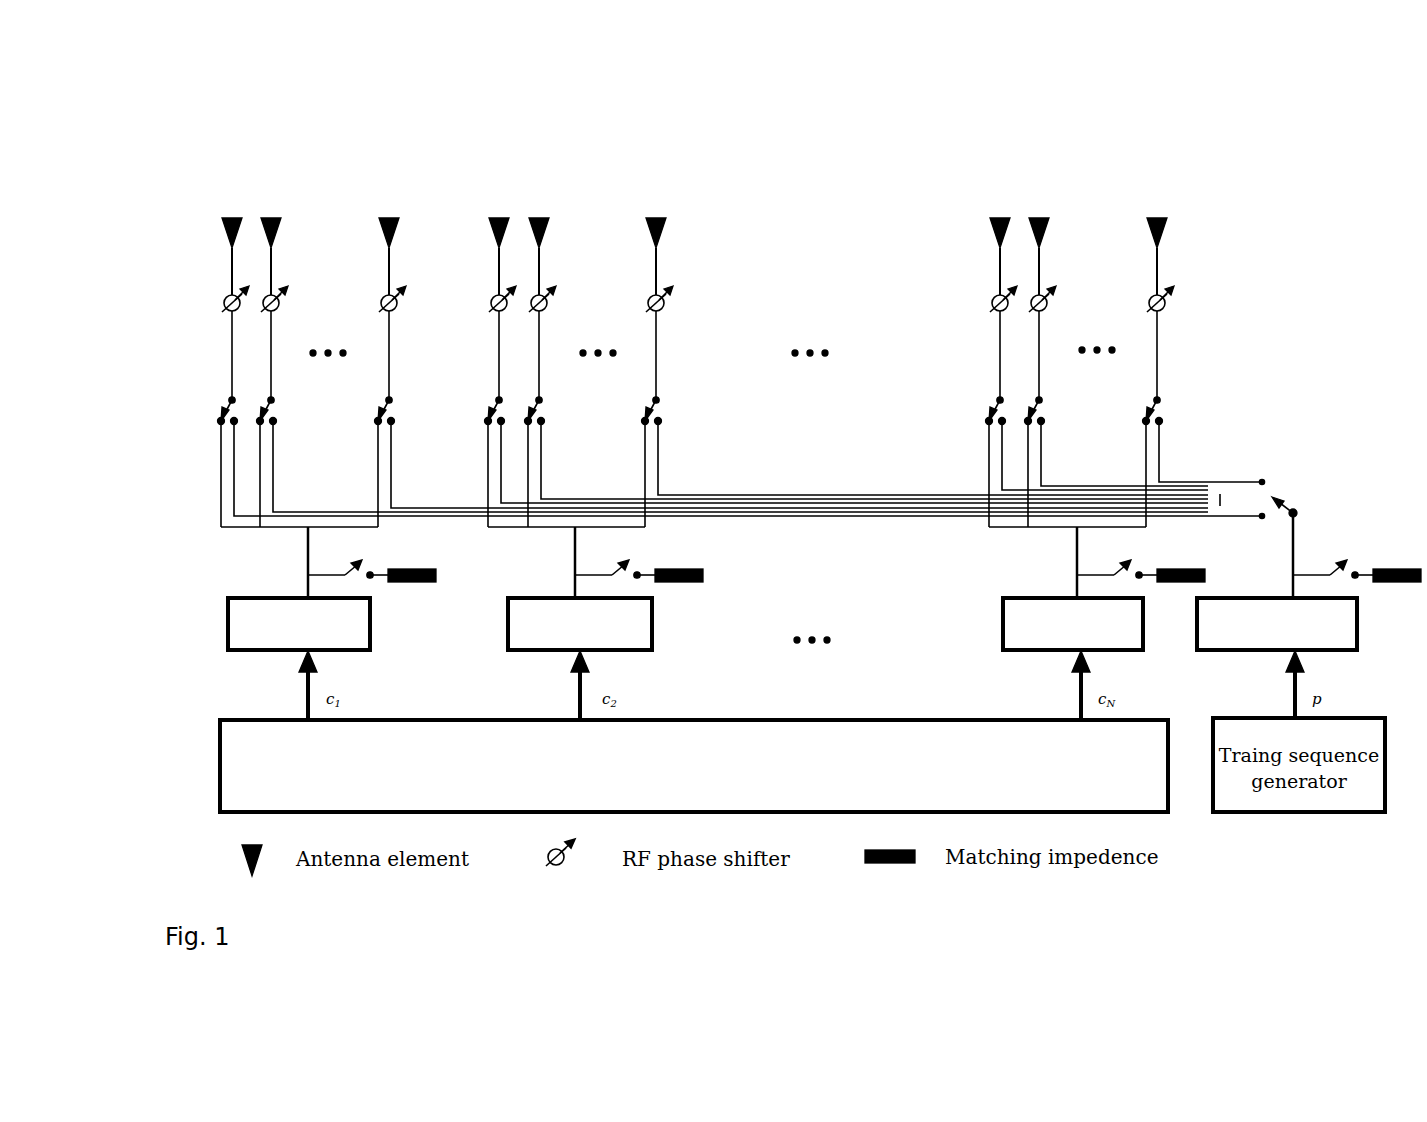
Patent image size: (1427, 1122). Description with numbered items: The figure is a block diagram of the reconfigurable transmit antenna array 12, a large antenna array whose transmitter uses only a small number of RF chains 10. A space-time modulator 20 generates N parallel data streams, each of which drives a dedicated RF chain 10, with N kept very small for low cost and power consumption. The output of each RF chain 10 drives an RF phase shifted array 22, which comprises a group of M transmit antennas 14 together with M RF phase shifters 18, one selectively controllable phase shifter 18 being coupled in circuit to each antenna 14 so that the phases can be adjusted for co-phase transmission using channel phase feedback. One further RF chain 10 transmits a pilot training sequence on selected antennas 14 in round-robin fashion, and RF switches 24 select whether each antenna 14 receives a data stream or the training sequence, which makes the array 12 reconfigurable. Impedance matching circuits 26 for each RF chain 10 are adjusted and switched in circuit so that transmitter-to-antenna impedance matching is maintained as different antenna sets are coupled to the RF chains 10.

The RF chain 10 is at (370, 650).
The reconfigurable transmit antenna array 12 is at (965, 83).
The transmit antenna 14 is at (525, 192).
The RF phase shifter 18 is at (406, 283).
The space-time modulator 20 is at (242, 760).
The RF phase shifted array 22 is at (231, 253).
The RF switch 24 is at (215, 412).
The impedance matching circuit 26 is at (410, 568).